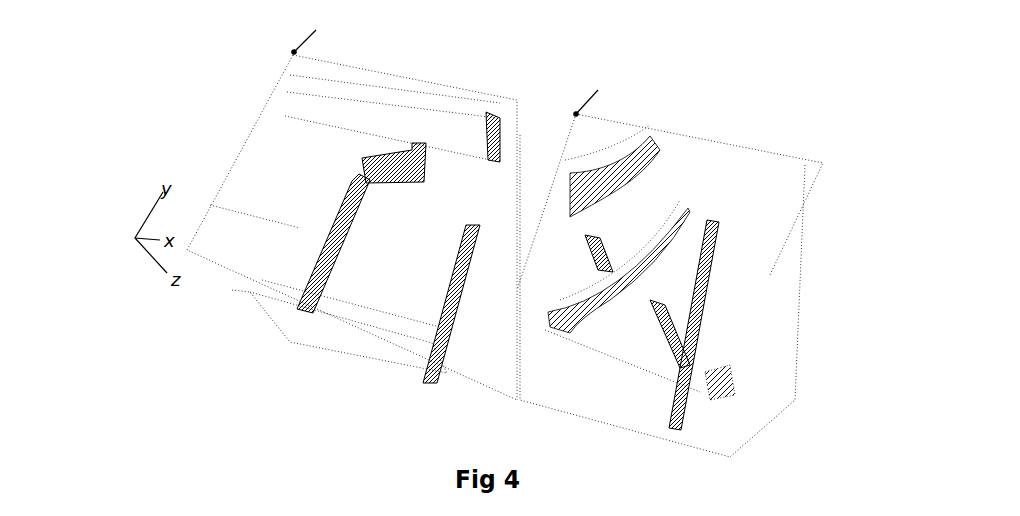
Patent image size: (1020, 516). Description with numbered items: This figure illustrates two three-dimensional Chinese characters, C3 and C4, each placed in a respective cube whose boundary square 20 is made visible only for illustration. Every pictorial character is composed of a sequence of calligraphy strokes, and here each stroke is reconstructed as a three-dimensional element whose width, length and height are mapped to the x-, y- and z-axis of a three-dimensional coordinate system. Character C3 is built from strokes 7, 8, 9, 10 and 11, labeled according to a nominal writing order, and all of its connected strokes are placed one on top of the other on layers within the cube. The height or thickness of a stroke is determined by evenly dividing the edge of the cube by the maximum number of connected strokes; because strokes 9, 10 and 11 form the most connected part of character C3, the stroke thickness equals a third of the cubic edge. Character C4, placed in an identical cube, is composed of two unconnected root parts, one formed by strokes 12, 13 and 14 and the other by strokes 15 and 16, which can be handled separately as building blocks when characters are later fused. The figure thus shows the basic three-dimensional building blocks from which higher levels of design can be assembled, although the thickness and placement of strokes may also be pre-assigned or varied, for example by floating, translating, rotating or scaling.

The stroke 7 is at (343, 88).
The stroke 8 is at (373, 148).
The stroke 9 is at (312, 213).
The stroke 10 is at (437, 267).
The stroke 11 is at (337, 333).
The stroke 12 is at (632, 138).
The stroke 13 is at (665, 188).
The stroke 14 is at (600, 245).
The stroke 15 is at (715, 290).
The stroke 16 is at (725, 357).
The square 20 is at (232, 290).
The character C3 is at (447, 110).
The character C4 is at (727, 227).